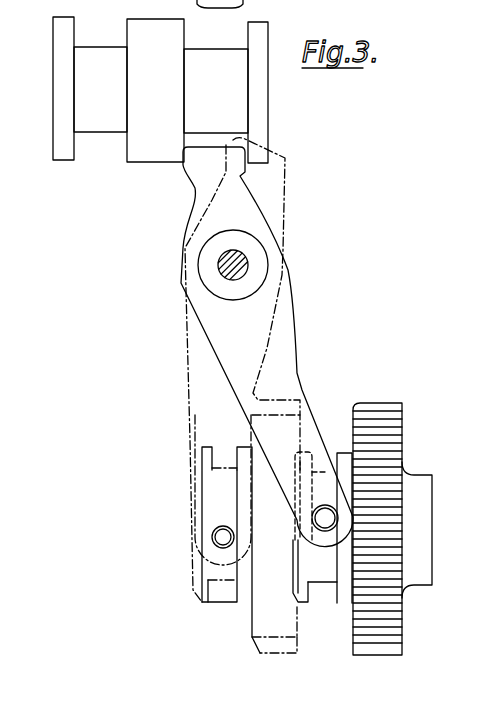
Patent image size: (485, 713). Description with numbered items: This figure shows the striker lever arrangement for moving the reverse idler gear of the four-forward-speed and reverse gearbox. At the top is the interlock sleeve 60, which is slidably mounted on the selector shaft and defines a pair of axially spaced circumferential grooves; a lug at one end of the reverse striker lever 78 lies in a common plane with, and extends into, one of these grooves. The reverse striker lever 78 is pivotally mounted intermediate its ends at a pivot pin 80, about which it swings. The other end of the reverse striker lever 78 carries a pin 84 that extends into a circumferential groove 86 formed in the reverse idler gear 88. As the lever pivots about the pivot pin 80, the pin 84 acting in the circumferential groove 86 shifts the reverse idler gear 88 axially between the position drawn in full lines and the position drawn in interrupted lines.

The interlock sleeve 60 is at (60, 149).
The reverse striker lever 78 is at (285, 310).
The pivot pin 80 is at (244, 262).
The pin 84 is at (325, 505).
The circumferential groove 86 is at (333, 595).
The reverse idler gear 88 is at (388, 607).